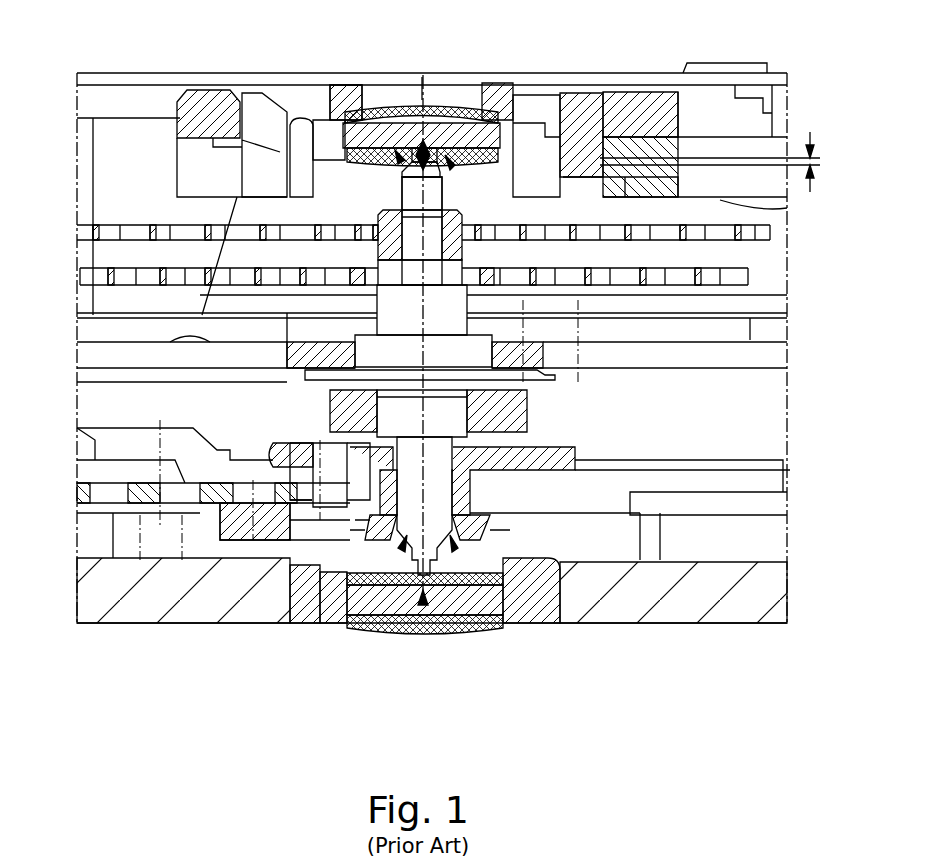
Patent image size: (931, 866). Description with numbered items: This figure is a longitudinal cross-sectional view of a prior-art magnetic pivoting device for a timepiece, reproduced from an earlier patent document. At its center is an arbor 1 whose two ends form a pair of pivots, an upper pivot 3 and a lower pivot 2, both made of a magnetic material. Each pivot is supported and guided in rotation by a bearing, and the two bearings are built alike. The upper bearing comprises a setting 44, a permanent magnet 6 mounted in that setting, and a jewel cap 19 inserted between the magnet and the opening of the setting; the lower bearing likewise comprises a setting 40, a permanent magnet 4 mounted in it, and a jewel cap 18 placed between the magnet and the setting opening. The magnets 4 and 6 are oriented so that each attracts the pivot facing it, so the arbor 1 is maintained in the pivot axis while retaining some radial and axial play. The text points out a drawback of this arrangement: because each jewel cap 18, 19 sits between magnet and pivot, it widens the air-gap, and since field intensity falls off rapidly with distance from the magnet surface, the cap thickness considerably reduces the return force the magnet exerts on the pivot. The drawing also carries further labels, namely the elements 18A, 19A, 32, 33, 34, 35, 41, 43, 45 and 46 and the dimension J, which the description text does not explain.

The arbor 1 is at (467, 351).
The pivot 2 is at (422, 595).
The pivot 3 is at (433, 80).
The permanent magnet 4 is at (478, 592).
The permanent magnet 6 is at (380, 110).
The jewel cap 18 is at (510, 615).
The lower housing wall 18A is at (493, 558).
The jewel cap 19 is at (463, 102).
The upper housing wall 19A is at (530, 120).
The lower bearing 32 is at (297, 540).
The spindle neck 33 is at (380, 185).
The lower support plate 34 is at (300, 518).
The spindle tip 35 is at (388, 152).
The setting 40 is at (345, 600).
The lower retaining nut 41 is at (308, 592).
The lower sealing gasket 43 is at (455, 628).
The setting 44 is at (301, 128).
The upper nut 45 is at (273, 90).
The upper gasket 46 is at (412, 115).
The clearance gap J is at (718, 162).